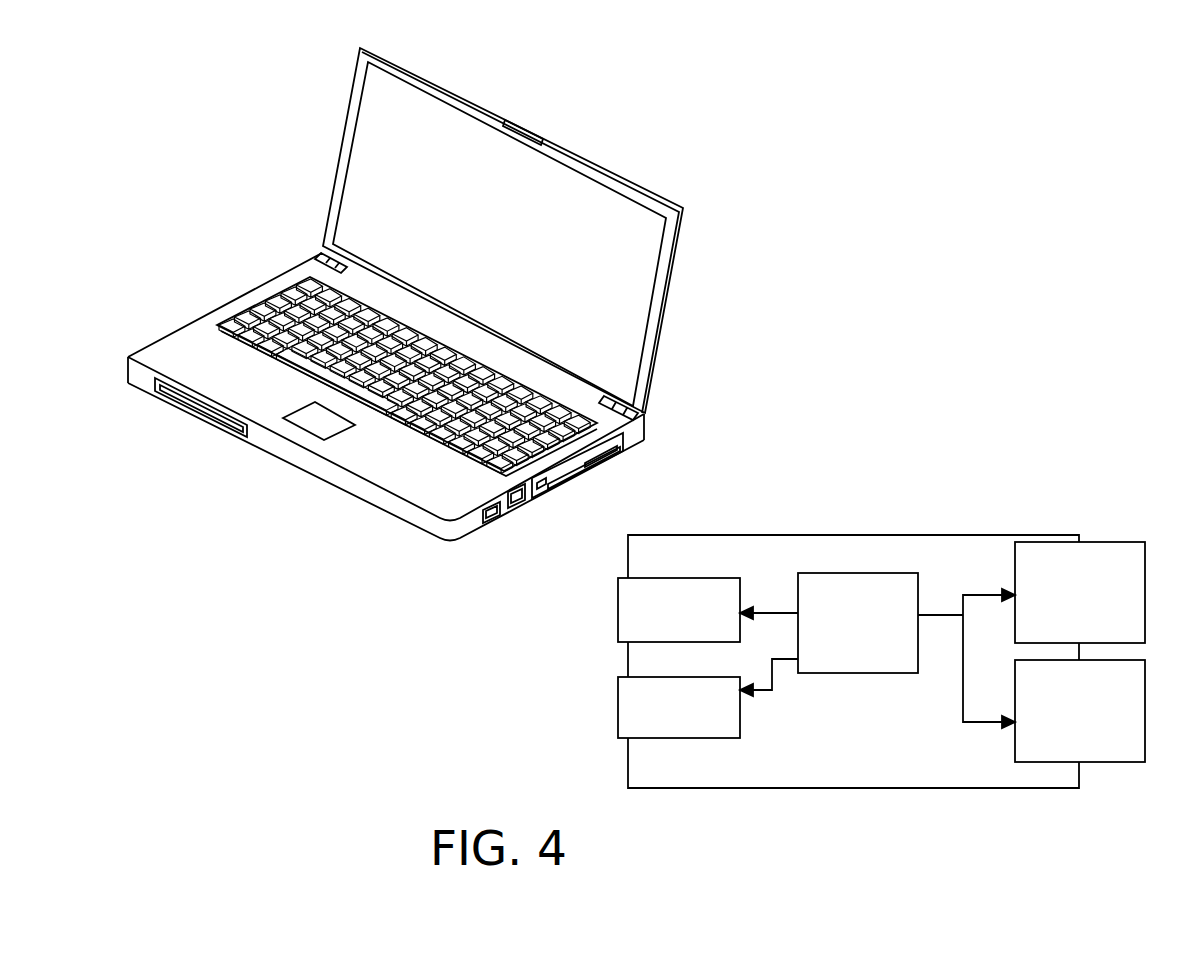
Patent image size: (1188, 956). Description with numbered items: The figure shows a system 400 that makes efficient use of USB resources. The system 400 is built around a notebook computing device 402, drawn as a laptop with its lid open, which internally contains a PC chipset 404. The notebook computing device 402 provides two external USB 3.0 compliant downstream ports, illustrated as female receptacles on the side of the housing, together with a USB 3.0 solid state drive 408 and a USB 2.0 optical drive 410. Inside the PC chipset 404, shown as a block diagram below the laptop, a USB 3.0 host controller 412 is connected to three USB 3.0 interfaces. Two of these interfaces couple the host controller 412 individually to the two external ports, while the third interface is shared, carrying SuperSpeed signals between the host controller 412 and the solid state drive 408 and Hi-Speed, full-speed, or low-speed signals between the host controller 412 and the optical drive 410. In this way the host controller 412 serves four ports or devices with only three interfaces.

The system 400 is at (650, 413).
The notebook computing device 402 is at (494, 104).
The PC chipset 404 is at (984, 535).
The USB 3.0 solid state drive 408 is at (618, 452).
The optical drive 410 is at (1080, 711).
The USB 3.0 host controller 412 is at (858, 623).